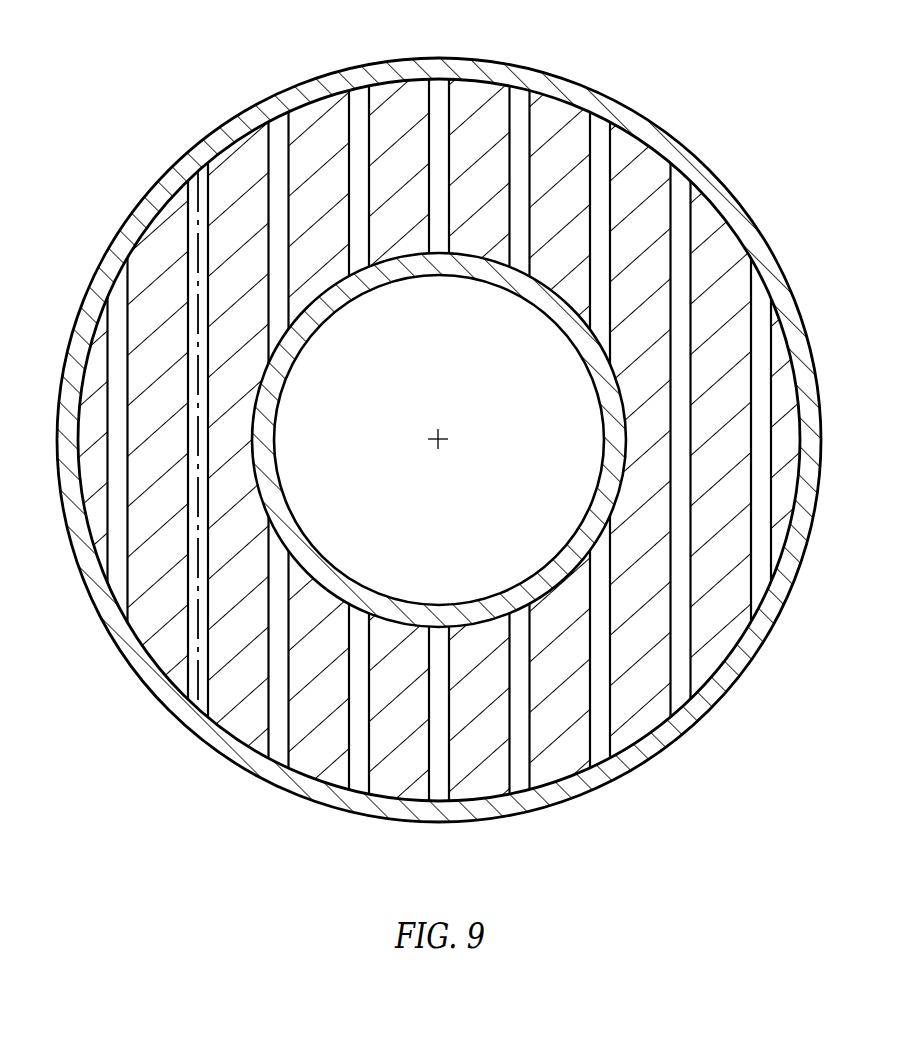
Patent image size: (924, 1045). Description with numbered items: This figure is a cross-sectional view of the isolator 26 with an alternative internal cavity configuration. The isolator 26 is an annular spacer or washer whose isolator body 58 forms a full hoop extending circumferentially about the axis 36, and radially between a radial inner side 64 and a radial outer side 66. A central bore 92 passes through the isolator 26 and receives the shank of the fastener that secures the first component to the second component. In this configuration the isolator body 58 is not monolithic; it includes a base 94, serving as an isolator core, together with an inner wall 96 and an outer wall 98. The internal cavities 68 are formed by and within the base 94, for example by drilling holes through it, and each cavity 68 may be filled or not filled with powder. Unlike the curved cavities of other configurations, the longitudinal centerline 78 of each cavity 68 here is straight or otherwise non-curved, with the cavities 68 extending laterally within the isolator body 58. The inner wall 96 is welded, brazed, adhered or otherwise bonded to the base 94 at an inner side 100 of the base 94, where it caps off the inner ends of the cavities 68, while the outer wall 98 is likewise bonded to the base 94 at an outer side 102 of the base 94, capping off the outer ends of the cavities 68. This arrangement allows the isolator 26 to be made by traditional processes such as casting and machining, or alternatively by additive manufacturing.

The isolator 26 is at (468, 494).
The isolator body 58 is at (468, 494).
The axis 36 is at (438, 442).
The radial inner side 64 is at (593, 395).
The radial outer side 66 is at (810, 333).
The internal cavities 68 is at (761, 572).
The longitudinal centerline 78 is at (197, 532).
The bore 92 is at (416, 377).
The base 94 is at (654, 143).
The inner wall 96 is at (537, 317).
The outer wall 98 is at (740, 188).
The inner side of the base 100 is at (623, 433).
The outer side of the base 102 is at (788, 522).